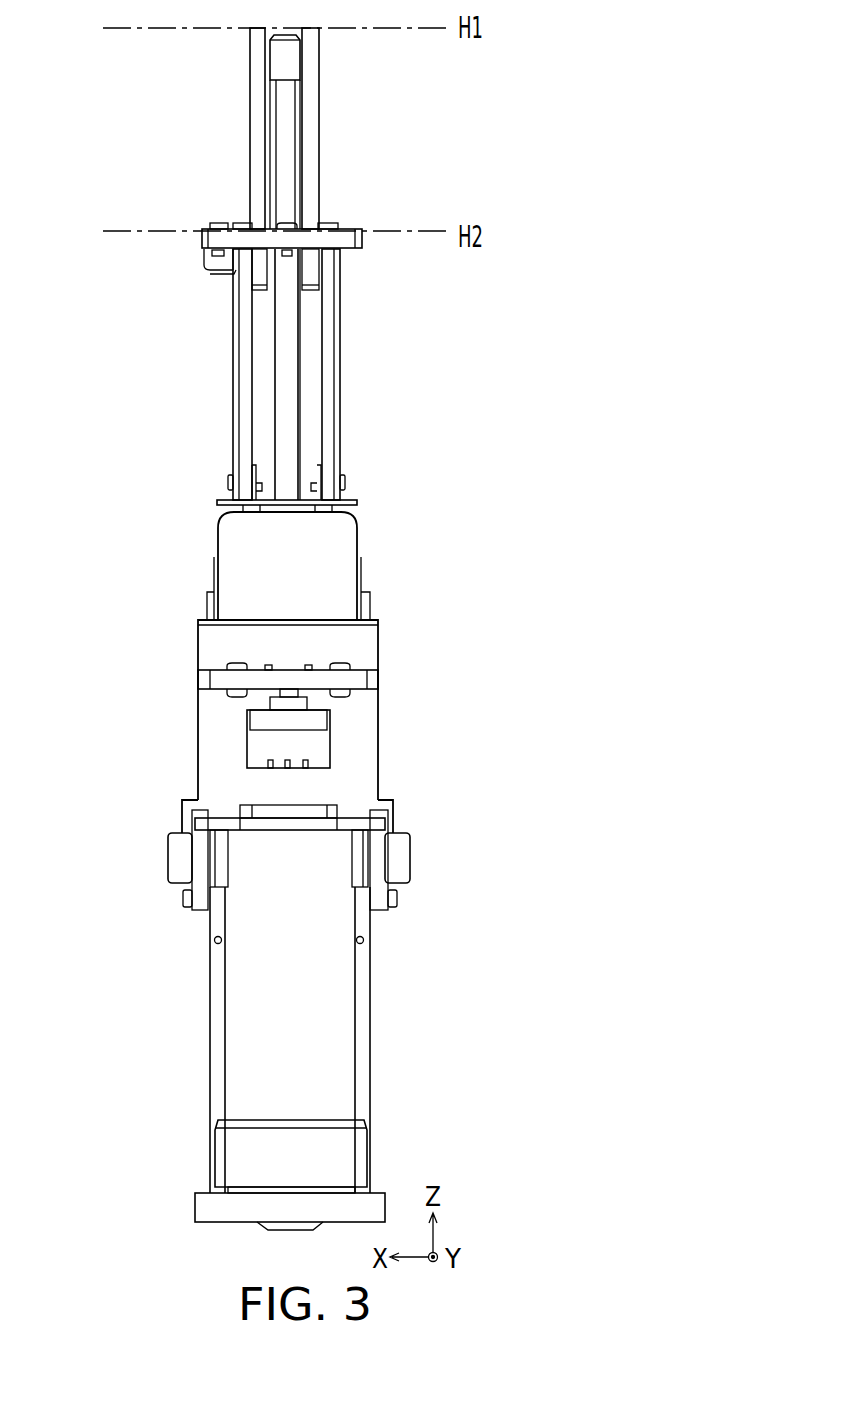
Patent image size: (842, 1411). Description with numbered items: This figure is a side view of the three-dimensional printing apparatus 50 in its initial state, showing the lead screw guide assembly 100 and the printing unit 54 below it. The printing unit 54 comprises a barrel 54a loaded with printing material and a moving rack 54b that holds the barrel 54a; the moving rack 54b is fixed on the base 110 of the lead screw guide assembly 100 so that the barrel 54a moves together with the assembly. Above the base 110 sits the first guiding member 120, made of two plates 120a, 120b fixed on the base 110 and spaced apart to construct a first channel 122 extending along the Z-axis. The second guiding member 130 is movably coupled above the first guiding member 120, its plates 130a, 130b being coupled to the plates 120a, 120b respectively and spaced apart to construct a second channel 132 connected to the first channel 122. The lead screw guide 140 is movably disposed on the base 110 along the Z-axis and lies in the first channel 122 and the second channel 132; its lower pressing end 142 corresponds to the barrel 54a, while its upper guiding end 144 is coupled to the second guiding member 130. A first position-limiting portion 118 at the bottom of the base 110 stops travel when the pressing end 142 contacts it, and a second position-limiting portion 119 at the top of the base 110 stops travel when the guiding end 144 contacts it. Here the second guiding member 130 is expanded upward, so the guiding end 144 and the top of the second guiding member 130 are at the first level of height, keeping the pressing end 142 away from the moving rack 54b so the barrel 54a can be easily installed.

The 3D printing apparatus 50 is at (109, 1237).
The printing unit 54 is at (414, 931).
The barrel 54a is at (340, 1022).
The moving rack 54b is at (352, 775).
The lead screw guide assembly 100 is at (146, 79).
The base 110 is at (330, 543).
The first position-limiting portion 118 is at (362, 700).
The second position-limiting portion 119 is at (351, 491).
The first guiding member 120 is at (198, 411).
The plate 120a is at (243, 352).
The plate 120b is at (332, 352).
The first channel 122 is at (311, 400).
The second guiding member 130 is at (196, 170).
The plate 130a is at (258, 132).
The plate 130b is at (310, 132).
The second channel 132 is at (302, 181).
The lead screw guide 140 is at (285, 445).
The pressing end 142 is at (312, 745).
The guiding end 144 is at (283, 63).